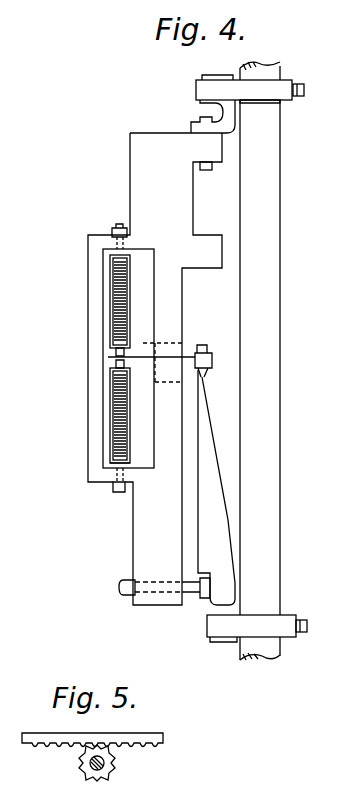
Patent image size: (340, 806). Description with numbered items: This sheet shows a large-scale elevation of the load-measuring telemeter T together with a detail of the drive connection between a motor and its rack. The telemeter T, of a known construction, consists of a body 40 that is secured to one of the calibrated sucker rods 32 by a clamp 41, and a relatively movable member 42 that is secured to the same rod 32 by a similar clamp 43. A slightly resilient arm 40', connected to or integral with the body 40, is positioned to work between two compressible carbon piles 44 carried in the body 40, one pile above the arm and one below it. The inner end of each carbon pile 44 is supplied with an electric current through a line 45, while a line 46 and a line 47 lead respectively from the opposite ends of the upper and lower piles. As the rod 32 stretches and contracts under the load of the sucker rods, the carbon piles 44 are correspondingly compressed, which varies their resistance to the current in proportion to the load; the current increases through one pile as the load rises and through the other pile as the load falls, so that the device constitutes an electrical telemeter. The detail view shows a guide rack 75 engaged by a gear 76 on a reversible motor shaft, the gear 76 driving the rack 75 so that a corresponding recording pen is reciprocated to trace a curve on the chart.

In FIG. 4, the rod 32 is at (270, 308).
In FIG. 4, the body 40 is at (161, 352).
In FIG. 4, the resilient arm 40' is at (167, 345).
In FIG. 4, the clamp 41 is at (250, 89).
In FIG. 4, the movable member 42 is at (212, 461).
In FIG. 4, the clamp 43 is at (257, 628).
In FIG. 4, the carbon pile 44 is at (115, 306).
In FIG. 4, the line 45 is at (108, 363).
In FIG. 4, the line 46 is at (112, 259).
In FIG. 4, the line 47 is at (115, 457).
In FIG. 4, the telemeter T is at (122, 176).
In FIG. 5, the guide rack 75 is at (152, 733).
In FIG. 5, the gear 76 is at (116, 768).